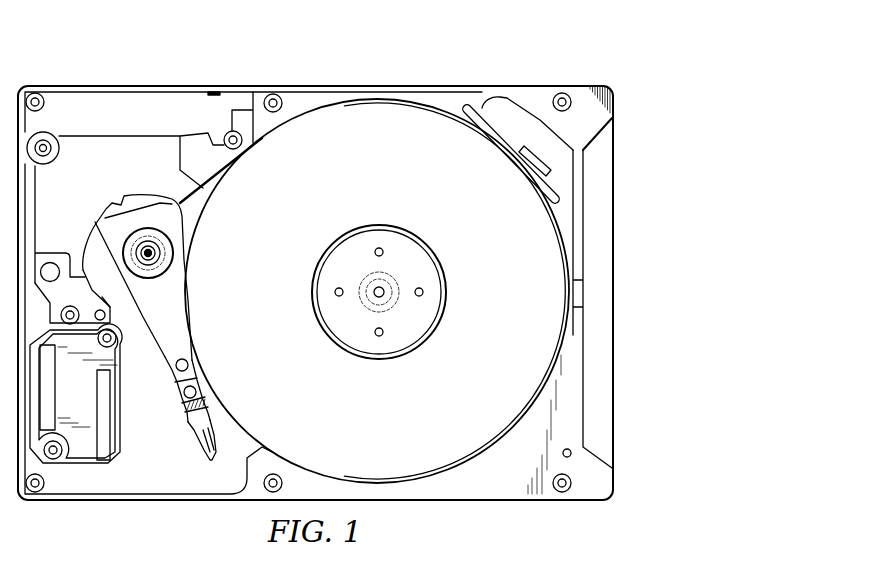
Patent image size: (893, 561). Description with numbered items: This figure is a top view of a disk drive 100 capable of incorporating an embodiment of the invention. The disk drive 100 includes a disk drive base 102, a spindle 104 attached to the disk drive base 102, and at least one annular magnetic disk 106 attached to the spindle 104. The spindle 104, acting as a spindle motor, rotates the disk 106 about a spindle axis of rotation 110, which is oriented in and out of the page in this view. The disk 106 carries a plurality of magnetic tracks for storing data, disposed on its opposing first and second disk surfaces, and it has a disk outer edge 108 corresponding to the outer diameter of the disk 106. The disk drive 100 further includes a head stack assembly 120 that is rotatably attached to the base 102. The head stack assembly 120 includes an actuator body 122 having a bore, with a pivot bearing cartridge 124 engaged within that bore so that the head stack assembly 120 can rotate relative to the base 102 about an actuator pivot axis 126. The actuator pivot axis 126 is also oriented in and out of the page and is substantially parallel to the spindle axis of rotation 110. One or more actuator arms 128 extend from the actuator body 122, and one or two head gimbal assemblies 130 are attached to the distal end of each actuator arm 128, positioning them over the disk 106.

The disk drive 100 is at (492, 68).
The disk drive base 102 is at (427, 96).
The spindle 104 is at (352, 253).
The annular magnetic disk 106 is at (455, 383).
The disk outer edge 108 is at (568, 330).
The spindle axis of rotation 110 is at (380, 288).
The head stack assembly 120 is at (149, 310).
The actuator body 122 is at (94, 245).
The pivot bearing cartridge 124 is at (170, 240).
The actuator pivot axis 126 is at (148, 247).
The actuator arm 128 is at (180, 333).
The head gimbal assembly 130 is at (197, 438).